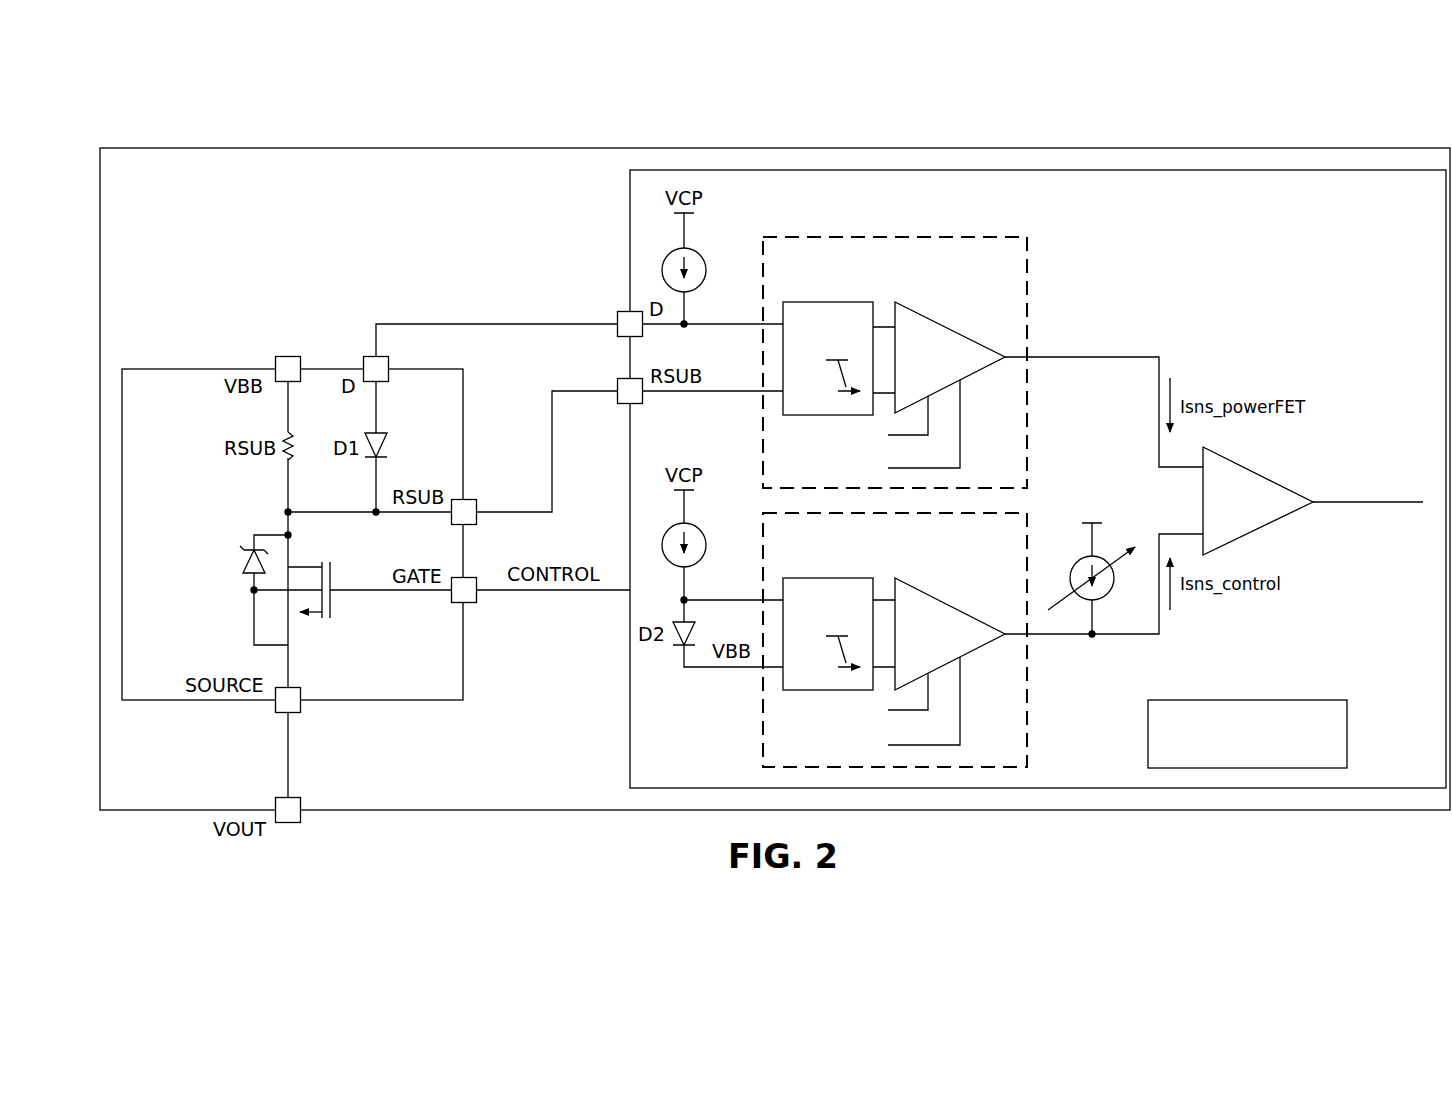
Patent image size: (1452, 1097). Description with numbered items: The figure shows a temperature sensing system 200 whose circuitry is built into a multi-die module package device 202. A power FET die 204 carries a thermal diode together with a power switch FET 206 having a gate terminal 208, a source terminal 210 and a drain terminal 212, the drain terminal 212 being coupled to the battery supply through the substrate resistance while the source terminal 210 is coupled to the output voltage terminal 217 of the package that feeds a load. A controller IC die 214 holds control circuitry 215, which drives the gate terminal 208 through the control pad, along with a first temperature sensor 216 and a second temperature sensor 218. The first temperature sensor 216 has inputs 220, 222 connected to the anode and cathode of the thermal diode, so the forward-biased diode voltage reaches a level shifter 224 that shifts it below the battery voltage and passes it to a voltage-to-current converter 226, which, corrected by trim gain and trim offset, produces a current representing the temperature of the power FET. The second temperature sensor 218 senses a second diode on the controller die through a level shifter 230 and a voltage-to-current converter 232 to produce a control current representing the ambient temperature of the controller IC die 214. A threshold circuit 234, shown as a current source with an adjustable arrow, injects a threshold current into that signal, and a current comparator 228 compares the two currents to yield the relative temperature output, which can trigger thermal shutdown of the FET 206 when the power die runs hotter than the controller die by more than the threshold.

The temperature sensing system 200 is at (585, 95).
The multi-die module package device 202 is at (775, 479).
The power FET die 204 is at (186, 367).
The FET 206 is at (332, 600).
The gate terminal 208 is at (478, 598).
The source terminal 210 is at (301, 707).
The drain terminal 212 is at (286, 512).
The controller IC die 214 is at (628, 233).
The control circuitry 215 is at (1348, 745).
The first temperature sensor 216 is at (1030, 296).
The output voltage terminal 217 is at (301, 817).
The second temperature sensor 218 is at (1030, 706).
The input 220 is at (617, 319).
The input 222 is at (617, 386).
The level shifter 224 is at (830, 302).
The voltage-to-current converter 226 is at (950, 328).
The current comparator 228 is at (1273, 478).
The level shifter 230 is at (830, 578).
The voltage-to-current converter 232 is at (950, 603).
The threshold circuit 234 is at (1108, 480).